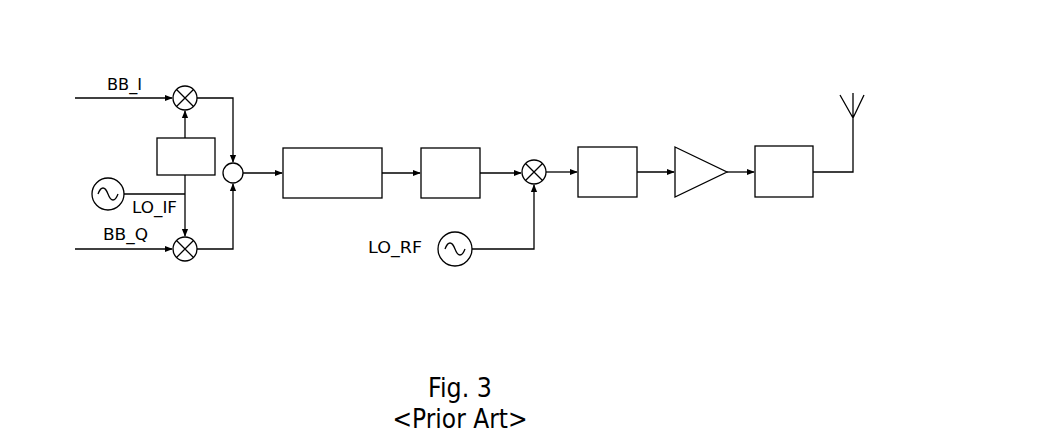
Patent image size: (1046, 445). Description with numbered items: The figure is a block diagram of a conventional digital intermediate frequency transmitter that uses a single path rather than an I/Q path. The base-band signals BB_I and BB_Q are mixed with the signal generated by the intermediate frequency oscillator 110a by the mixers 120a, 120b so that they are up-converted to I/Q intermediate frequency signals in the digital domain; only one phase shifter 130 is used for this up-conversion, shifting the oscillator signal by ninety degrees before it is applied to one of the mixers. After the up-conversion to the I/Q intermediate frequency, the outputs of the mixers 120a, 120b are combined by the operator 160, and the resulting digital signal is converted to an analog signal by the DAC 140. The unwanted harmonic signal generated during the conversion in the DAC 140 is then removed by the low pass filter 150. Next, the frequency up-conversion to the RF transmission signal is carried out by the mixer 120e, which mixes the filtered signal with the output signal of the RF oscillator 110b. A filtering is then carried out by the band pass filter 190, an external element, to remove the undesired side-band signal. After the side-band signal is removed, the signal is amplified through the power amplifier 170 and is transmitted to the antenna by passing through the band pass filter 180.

The intermediate frequency oscillator 110a is at (92, 190).
The RF oscillator 110b is at (470, 258).
The mixer 120a is at (186, 86).
The mixer 120b is at (192, 260).
The mixer 120e is at (542, 160).
The phase shifter 130 is at (195, 175).
The DAC 140 is at (338, 148).
The low pass filter 150 is at (459, 148).
The operator 160 is at (242, 182).
The power amplifier 170 is at (688, 146).
The band pass filter 180 is at (767, 197).
The band pass filter 190 is at (610, 147).